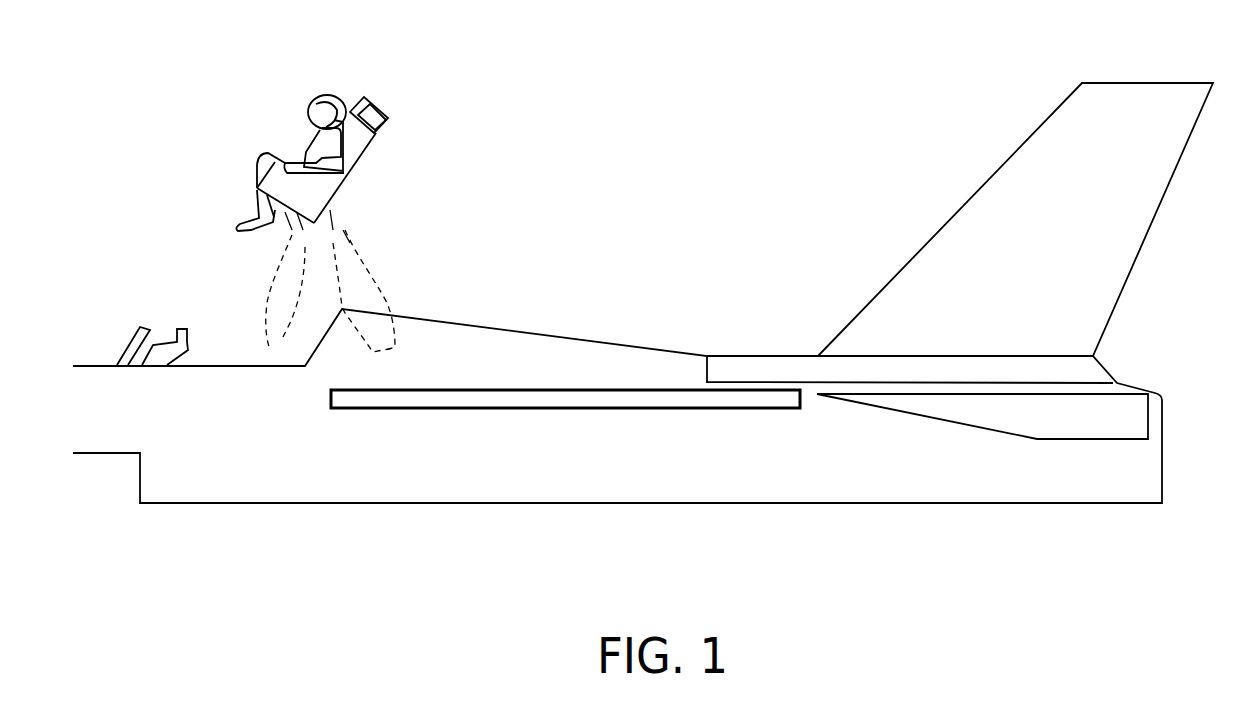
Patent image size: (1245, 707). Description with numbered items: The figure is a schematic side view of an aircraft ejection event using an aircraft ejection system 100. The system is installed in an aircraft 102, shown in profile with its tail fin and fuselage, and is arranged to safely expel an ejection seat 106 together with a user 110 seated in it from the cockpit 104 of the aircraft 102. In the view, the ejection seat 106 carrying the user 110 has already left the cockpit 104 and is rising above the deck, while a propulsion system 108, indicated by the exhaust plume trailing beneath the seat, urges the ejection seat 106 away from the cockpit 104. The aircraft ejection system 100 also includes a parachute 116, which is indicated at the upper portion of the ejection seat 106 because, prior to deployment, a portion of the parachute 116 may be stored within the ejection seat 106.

The aircraft ejection system 100 is at (504, 194).
The aircraft 102 is at (659, 461).
The cockpit 104 is at (212, 348).
The ejection seat 106 is at (375, 154).
The propulsion system 108 is at (352, 255).
The user 110 is at (318, 95).
The parachute 116 is at (378, 112).